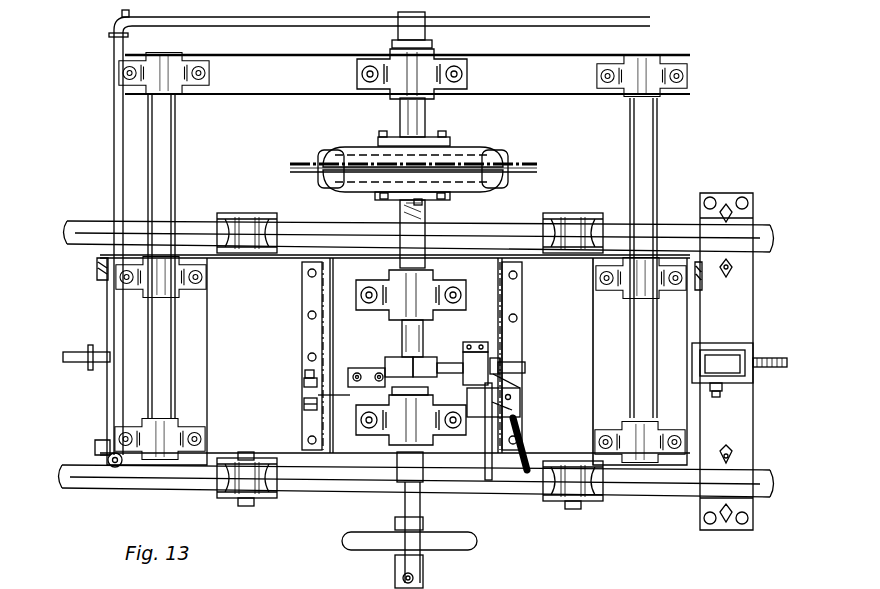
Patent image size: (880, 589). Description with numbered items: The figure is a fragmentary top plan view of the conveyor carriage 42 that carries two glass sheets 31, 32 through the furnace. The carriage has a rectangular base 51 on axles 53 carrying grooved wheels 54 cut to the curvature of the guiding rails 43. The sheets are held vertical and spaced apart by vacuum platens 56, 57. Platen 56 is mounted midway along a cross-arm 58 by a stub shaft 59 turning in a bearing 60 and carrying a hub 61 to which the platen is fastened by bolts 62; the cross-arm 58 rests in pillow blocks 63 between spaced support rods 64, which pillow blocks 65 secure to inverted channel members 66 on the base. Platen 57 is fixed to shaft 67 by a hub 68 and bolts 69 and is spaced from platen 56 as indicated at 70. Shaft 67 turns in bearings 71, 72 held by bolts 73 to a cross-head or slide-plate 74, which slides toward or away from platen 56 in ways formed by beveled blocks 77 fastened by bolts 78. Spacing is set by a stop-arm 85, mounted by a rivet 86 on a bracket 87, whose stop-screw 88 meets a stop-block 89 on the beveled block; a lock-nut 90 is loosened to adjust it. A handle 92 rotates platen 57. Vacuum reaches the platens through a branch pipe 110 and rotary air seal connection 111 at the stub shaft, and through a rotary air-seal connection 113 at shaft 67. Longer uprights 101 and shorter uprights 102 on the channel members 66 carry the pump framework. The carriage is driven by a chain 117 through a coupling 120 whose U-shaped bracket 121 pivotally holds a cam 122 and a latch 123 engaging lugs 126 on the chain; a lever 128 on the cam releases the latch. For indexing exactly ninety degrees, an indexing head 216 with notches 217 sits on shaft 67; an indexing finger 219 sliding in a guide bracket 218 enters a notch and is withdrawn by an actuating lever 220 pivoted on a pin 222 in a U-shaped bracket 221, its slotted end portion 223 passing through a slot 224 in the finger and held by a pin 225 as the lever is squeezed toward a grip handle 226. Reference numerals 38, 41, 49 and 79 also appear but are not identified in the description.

The rotary air seal connection 111 is at (410, 25).
The bearing 60 is at (423, 74).
The cross-arm 58 is at (538, 95).
The pillow blocks 63 is at (168, 80).
The support rods 64 is at (160, 143).
The branch pipe 110 is at (116, 133).
The sheet 31 is at (305, 157).
The sheet 32 is at (305, 176).
The bolts 62 is at (400, 137).
The hub 61 is at (390, 142).
The stub shaft 59 is at (415, 116).
The vacuum platen 56 is at (475, 148).
The spacing 70 is at (524, 170).
The vacuum platen 57 is at (468, 200).
The shaft 67 is at (408, 230).
The bolts 69 is at (421, 205).
The hub 68 is at (441, 200).
The grooved wheels 54 is at (247, 228).
The rails 43 is at (740, 240).
The side plate bolt 49 is at (740, 268).
The vertical angle iron uprights 101 is at (97, 263).
The lugs 126 is at (90, 346).
The chain 117 is at (73, 358).
The vertical angle iron uprights 102 is at (95, 447).
The pillow blocks 65 is at (168, 280).
The inverted channel members 66 is at (190, 345).
The cross-head or slide-plate 74 is at (347, 278).
The beveled blocks 77 is at (325, 305).
The bolts 78 is at (521, 275).
The bearing 71 is at (420, 292).
The bolts 73 is at (455, 296).
The indexing head 216 is at (395, 360).
The notches 217 is at (432, 360).
The guide bracket 218 is at (472, 345).
The slotted end portion 223 is at (500, 360).
The slot 224 is at (525, 364).
The pin 225 is at (520, 376).
The pin 222 is at (520, 395).
The U-shaped bracket 221 is at (512, 405).
The actuating lever 220 is at (527, 445).
The stop-block 89 is at (305, 373).
The stop-screw 88 is at (304, 383).
The stop-arm 85 is at (318, 395).
The lock-nut 90 is at (304, 405).
The rivet 86 is at (357, 372).
The bracket 87 is at (380, 372).
The indexing finger 219 is at (450, 373).
The lower shaft bearing 79 is at (400, 490).
The bearing 72 is at (432, 450).
The grip handle 226 is at (490, 470).
The handle 92 is at (470, 540).
The rotary air-seal connection 113 is at (425, 578).
The lower rail tube 41 is at (92, 490).
The carriage 42 is at (232, 442).
The axles 53 is at (247, 458).
The base 51 is at (580, 430).
The coupling 120 is at (727, 335).
The U-shaped bracket 121 is at (742, 347).
The latch 123 is at (755, 367).
The cam 122 is at (722, 385).
The lever 128 is at (720, 394).
The base 38 is at (47, 580).